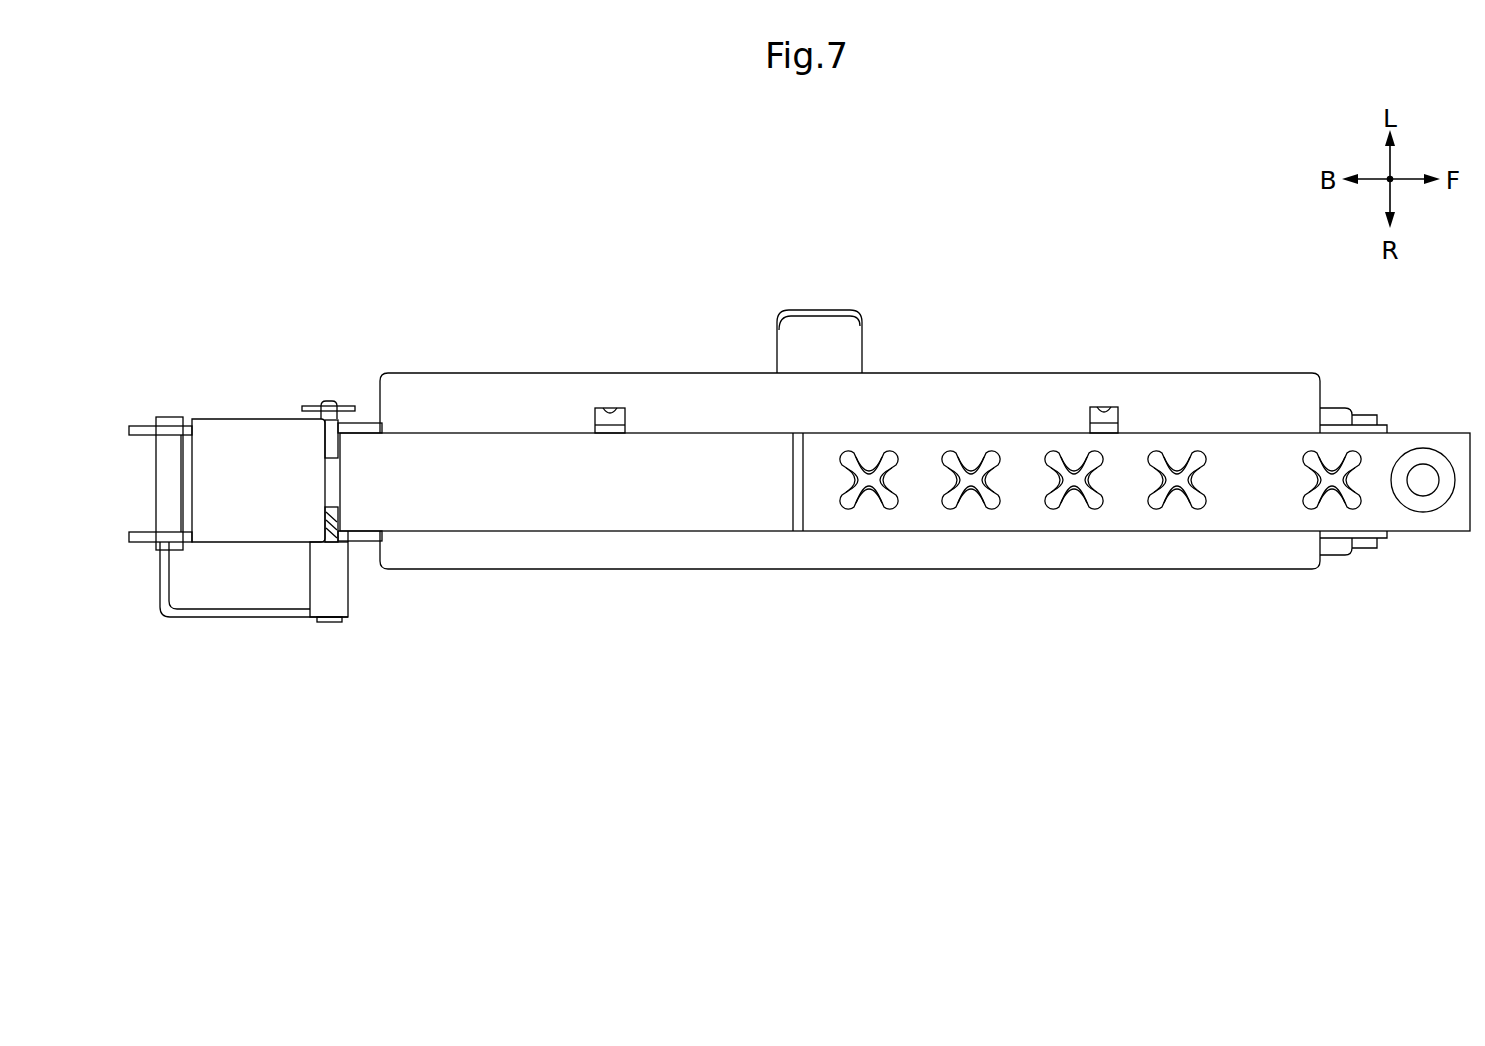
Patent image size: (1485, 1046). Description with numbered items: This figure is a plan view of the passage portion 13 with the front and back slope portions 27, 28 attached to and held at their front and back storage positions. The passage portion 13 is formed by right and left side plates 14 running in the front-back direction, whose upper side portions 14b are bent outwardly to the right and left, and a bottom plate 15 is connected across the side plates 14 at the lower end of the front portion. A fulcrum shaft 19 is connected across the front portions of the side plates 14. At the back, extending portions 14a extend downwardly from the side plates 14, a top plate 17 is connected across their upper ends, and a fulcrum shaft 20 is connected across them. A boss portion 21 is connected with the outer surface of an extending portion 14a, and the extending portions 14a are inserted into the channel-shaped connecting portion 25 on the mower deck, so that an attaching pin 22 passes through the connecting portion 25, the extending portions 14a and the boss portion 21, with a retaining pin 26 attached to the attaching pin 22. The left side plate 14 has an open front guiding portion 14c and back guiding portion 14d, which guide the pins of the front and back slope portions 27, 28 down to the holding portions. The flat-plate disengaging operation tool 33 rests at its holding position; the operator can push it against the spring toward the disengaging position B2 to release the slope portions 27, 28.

The passage portion 13 is at (508, 338).
The side plate 14 is at (688, 450).
The extending portion 14a is at (143, 426).
The upper side portion 14b is at (1003, 404).
The front guiding portion 14c is at (1104, 412).
The back guiding portion 14d is at (610, 413).
The bottom plate 15 is at (1333, 542).
The top plate 17 is at (262, 445).
The fulcrum shaft 19 is at (1365, 412).
The fulcrum shaft 20 is at (170, 485).
The boss portion 21 is at (333, 587).
The attaching pin 22 is at (328, 622).
The connecting portion 25 is at (227, 618).
The retaining pin 26 is at (345, 402).
The front slope portion 27 is at (1024, 497).
The back slope portion 28 is at (617, 500).
The disengaging operation tool 33 is at (820, 340).
The disengaging position B2 is at (884, 405).